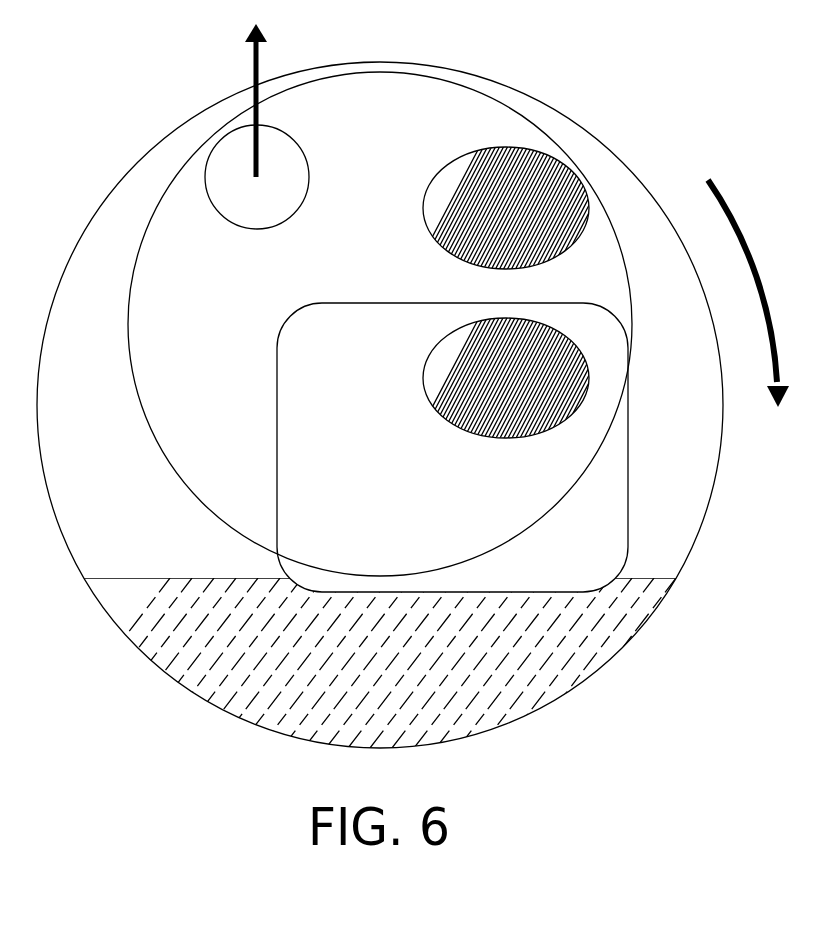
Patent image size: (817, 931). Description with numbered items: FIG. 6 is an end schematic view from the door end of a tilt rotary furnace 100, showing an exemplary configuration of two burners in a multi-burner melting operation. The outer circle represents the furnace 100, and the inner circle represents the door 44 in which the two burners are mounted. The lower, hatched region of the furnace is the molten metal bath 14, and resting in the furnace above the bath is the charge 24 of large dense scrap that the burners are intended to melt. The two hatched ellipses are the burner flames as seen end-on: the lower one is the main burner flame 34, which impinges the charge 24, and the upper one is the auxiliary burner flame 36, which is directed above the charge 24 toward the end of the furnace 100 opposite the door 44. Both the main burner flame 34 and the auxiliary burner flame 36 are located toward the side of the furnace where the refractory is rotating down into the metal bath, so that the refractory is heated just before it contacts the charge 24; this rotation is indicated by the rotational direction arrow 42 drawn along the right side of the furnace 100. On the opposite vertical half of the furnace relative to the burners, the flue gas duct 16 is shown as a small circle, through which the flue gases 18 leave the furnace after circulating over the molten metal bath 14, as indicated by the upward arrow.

The rotary furnace 100 is at (685, 128).
The molten metal bath 14 is at (369, 671).
The flue gas duct 16 is at (246, 210).
The flue gases 18 is at (259, 55).
The charge 24 is at (381, 476).
The main burner flame 34 is at (495, 390).
The auxiliary burner flame 36 is at (495, 219).
The rotational direction arrow 42 is at (752, 258).
The door 44 is at (131, 352).